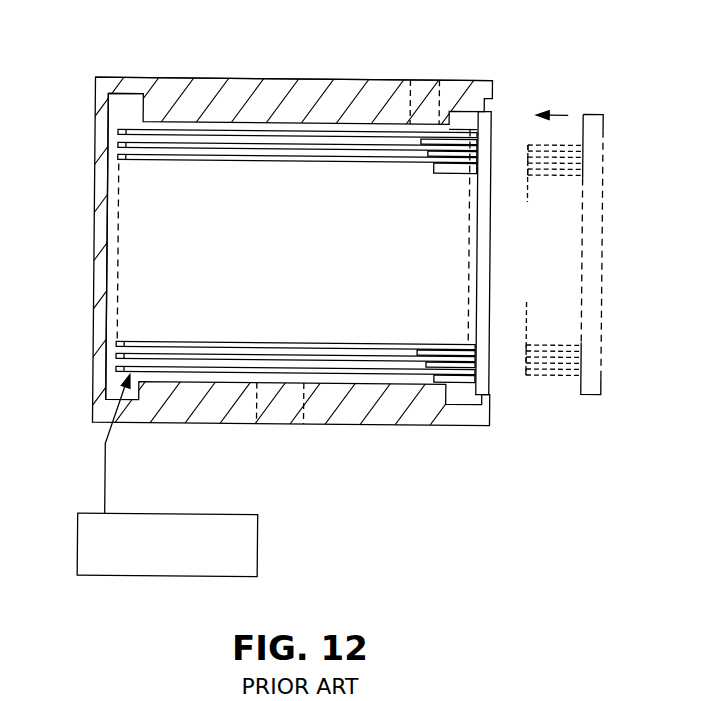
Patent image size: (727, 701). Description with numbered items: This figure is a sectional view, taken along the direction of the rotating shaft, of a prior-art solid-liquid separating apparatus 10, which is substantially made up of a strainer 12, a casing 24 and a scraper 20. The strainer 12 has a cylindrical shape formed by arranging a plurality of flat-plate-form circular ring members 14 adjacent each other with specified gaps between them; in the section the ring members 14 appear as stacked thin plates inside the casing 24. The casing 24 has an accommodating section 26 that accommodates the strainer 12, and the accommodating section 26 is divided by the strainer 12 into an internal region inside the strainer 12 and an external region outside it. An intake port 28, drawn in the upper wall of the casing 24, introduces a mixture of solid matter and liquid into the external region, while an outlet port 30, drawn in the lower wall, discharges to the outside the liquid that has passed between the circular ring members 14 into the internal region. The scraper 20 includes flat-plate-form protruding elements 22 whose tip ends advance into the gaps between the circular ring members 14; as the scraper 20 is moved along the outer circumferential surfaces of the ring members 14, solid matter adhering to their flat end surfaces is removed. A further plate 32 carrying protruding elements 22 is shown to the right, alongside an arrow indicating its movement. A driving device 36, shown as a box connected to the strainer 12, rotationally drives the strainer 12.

The solid-liquid separating apparatus 10 is at (570, 75).
The strainer 12 is at (460, 120).
The circular ring members 14 is at (117, 133).
The scraper 20 is at (490, 396).
The protruding elements 22 is at (420, 141).
The casing 24 is at (150, 68).
The accommodating section 26 is at (120, 108).
The intake port 28 is at (425, 79).
The outlet port 30 is at (262, 404).
The movable plate 32 is at (603, 209).
The driving device 36 is at (255, 560).